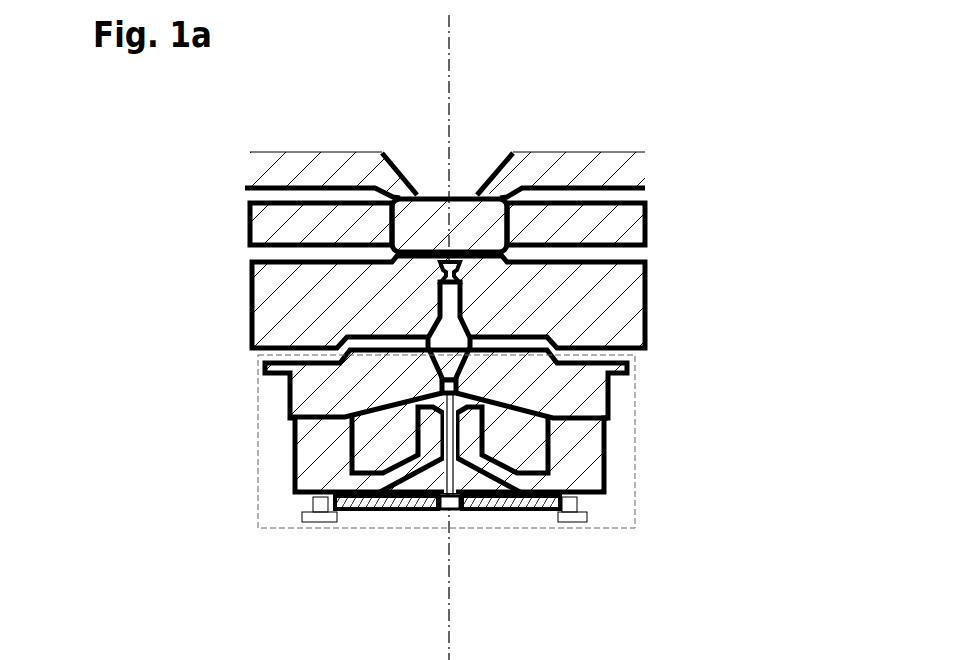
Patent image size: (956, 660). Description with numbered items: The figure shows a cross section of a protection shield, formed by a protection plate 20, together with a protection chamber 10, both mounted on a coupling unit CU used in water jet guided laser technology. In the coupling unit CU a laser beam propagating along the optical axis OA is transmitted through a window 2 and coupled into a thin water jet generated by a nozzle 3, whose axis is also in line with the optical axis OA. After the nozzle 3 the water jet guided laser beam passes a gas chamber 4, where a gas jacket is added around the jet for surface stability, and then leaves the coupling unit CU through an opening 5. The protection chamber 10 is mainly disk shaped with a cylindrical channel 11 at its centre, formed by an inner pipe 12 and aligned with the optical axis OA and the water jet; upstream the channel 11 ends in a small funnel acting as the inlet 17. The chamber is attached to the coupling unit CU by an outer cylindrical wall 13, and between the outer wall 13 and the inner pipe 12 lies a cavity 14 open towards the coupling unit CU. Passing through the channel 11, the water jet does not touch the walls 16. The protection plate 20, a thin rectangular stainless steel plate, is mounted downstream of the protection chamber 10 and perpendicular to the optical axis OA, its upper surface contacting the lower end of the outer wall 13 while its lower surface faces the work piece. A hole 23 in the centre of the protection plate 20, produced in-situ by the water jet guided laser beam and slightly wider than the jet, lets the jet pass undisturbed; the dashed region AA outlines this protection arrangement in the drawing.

The window 2 is at (422, 212).
The nozzle 3 is at (443, 270).
The gas chamber 4 is at (368, 347).
The opening 5 is at (457, 385).
The protection chamber 10 is at (479, 514).
The channel 11 is at (462, 510).
The inner pipe 12 is at (470, 445).
The outer cylindrical wall 13 is at (320, 470).
The cavity 14 is at (505, 445).
The walls of the channel 16 is at (440, 445).
The inlet 17 is at (478, 408).
The protection plate 20 is at (387, 510).
The hole 23 is at (452, 512).
The optical axis OA is at (449, 78).
The actuator assembly region AA is at (278, 518).
The coupling unit CU is at (717, 118).